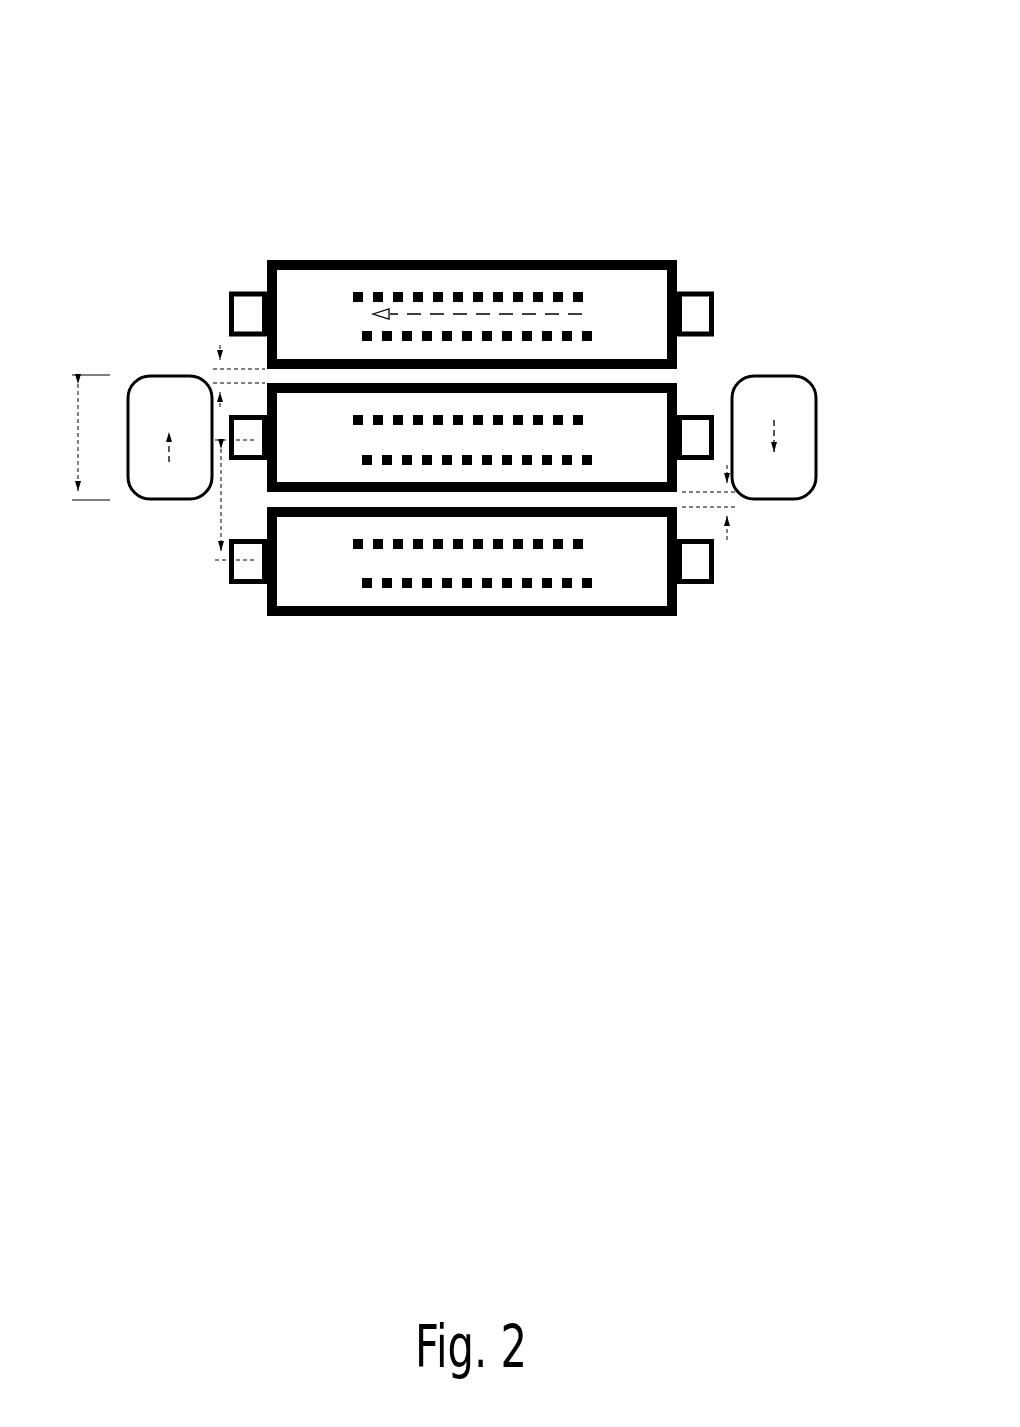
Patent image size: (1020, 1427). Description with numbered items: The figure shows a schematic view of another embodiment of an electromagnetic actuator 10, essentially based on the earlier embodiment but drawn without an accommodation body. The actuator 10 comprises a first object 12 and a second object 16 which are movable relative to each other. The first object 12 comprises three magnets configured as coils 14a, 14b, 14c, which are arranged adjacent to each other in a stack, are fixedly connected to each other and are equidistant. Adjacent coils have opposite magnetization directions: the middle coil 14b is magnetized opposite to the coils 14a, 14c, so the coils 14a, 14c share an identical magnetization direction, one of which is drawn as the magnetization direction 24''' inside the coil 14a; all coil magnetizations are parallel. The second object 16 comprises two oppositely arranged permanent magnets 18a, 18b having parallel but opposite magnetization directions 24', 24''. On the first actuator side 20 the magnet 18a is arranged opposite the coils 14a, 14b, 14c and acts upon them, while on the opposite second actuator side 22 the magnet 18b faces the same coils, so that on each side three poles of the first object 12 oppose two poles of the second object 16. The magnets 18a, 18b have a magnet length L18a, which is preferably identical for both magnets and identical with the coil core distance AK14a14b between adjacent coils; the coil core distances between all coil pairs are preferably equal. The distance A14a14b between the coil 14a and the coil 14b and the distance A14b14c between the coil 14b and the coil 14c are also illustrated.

The electromagnetic actuator 10 is at (158, 108).
The first object 12 is at (630, 117).
The second object 16 is at (825, 117).
The coil 14a is at (522, 264).
The middle coil 14b is at (654, 407).
The coil 14c is at (550, 593).
The magnet 18a is at (112, 435).
The magnet 18b is at (824, 398).
The first actuator side 20 is at (214, 614).
The second actuator side 22 is at (726, 612).
The magnetization direction 24' is at (120, 379).
The magnetization direction 24'' is at (844, 434).
The magnetization direction 24''' is at (477, 242).
The magnet length L18a is at (57, 437).
The distance between coil 14a and coil 14b A14a14b is at (218, 368).
The coil core distance AK14a14b is at (221, 500).
The distance between coil 14b and coil 14c A14b14c is at (728, 497).